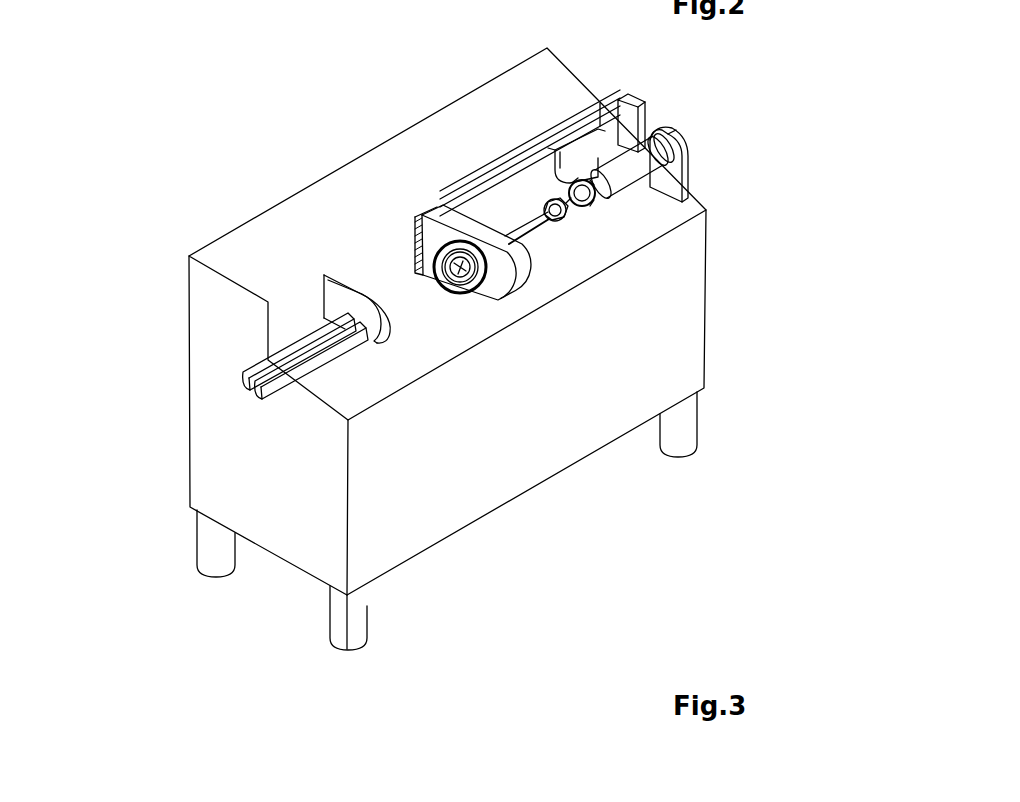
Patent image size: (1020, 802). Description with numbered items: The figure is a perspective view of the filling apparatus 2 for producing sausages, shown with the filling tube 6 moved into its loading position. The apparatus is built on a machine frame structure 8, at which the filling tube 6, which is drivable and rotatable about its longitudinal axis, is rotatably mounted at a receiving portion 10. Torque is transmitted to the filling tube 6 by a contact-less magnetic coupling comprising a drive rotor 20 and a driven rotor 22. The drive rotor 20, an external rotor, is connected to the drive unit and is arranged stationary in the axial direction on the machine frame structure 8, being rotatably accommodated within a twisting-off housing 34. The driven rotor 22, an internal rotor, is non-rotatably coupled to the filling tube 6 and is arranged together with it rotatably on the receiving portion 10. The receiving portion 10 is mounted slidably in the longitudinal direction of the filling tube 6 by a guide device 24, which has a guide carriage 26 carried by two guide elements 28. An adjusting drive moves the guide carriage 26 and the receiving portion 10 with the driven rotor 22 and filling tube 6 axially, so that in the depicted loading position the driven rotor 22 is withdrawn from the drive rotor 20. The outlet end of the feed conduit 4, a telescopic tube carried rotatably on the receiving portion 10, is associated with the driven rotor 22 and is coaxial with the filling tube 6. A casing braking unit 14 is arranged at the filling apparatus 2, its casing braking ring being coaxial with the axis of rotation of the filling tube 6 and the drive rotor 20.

The filling apparatus 2 is at (745, 487).
The feed conduit 4 is at (640, 167).
The filling tube 6 is at (517, 226).
The machine frame structure 8 is at (413, 535).
The receiving portion 10 is at (607, 187).
The casing braking unit 14 is at (340, 303).
The drive rotor 20 is at (459, 277).
The driven rotor 22 is at (573, 203).
The guide device 24 is at (530, 154).
The guide carriage 26 is at (573, 177).
The guide elements 28 is at (607, 128).
The twisting-off housing 34 is at (443, 220).